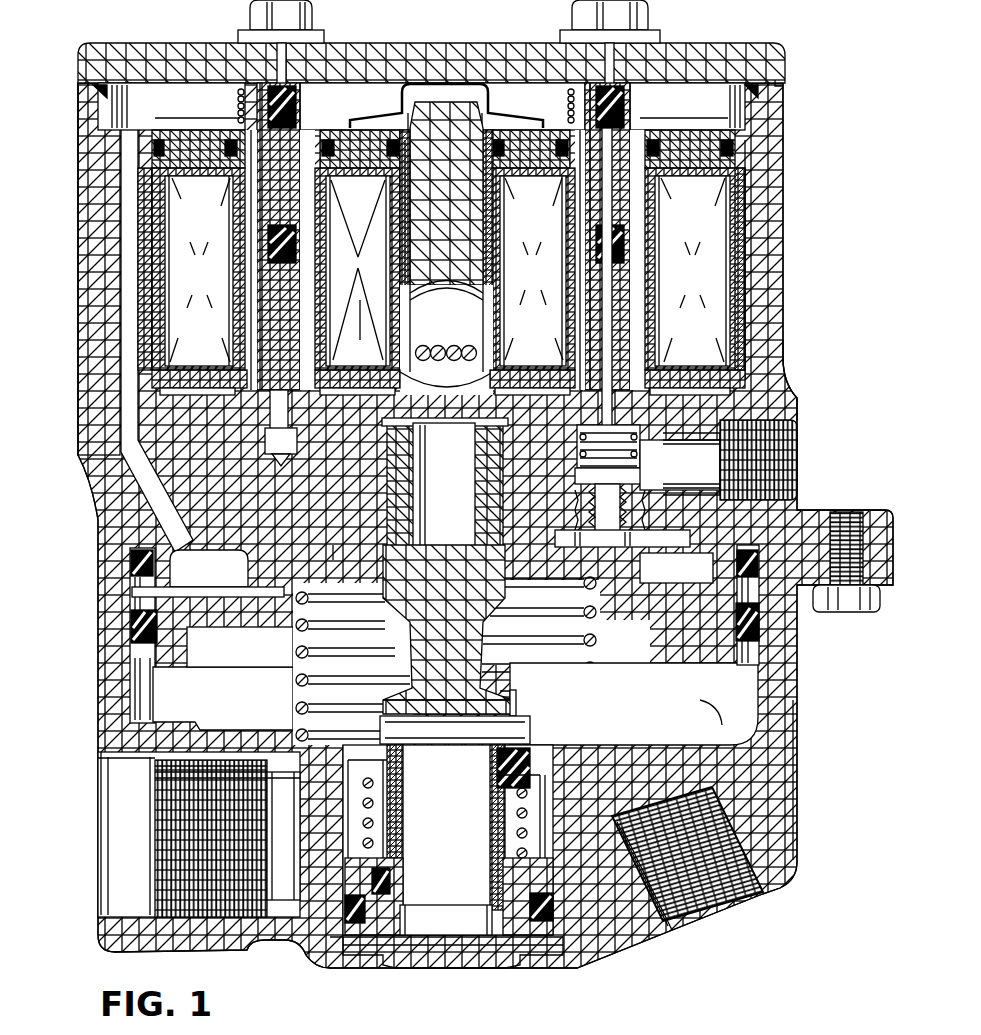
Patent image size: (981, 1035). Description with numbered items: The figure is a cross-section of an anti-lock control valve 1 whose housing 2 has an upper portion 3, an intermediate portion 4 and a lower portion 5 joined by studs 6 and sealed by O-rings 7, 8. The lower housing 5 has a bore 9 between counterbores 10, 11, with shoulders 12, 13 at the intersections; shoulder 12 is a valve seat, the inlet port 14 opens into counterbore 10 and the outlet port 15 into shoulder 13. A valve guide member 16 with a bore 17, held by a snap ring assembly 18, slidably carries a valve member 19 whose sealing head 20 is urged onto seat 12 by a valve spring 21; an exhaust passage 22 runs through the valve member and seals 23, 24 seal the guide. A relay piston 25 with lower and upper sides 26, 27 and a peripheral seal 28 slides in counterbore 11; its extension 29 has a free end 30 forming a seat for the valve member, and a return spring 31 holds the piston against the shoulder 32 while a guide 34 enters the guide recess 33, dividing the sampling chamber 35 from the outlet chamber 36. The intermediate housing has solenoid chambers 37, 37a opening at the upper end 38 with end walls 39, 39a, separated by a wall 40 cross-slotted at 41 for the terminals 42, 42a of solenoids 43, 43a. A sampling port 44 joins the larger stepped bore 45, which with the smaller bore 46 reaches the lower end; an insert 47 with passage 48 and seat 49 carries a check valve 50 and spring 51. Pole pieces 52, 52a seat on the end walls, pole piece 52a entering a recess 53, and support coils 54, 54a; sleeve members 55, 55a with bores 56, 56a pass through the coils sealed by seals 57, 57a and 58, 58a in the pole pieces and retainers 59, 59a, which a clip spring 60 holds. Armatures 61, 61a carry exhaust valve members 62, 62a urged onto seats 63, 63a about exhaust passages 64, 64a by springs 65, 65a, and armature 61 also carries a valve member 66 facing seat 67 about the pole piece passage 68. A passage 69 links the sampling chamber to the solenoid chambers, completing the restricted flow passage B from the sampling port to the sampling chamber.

The control valve 1 is at (80, 507).
The housing 2 is at (78, 437).
The upper housing portion 3 is at (786, 50).
The intermediate housing portion 4 is at (788, 372).
The lower housing portion 5 is at (786, 823).
The studs 6 is at (650, 6).
The seal 7 is at (93, 92).
The seal 8 is at (130, 563).
The bore 9 is at (515, 731).
The counterbore 10 is at (548, 802).
The counterbore 11 is at (755, 694).
The annular shoulder 12 is at (514, 720).
The annular shoulder 13 is at (242, 726).
The inlet port 14 is at (100, 912).
The outlet port 15 is at (755, 896).
The valve guide member 16 is at (553, 916).
The guide bore 17 is at (500, 920).
The groove and snap ring assembly 18 is at (552, 957).
The valve member 19 is at (461, 853).
The sealing head 20 is at (497, 760).
The valve spring 21 is at (352, 826).
The exhaust passage 22 is at (490, 803).
The seal 23 is at (348, 906).
The seal 24 is at (392, 880).
The relay piston 25 is at (657, 670).
The lower side 26 is at (222, 640).
The upper side 27 is at (333, 545).
The peripheral seal 28 is at (130, 624).
The extension 29 is at (461, 650).
The free end portion 30 is at (470, 700).
The return spring 31 is at (597, 641).
The shoulder 32 is at (240, 548).
The guide recess 33 is at (385, 465).
The guide 34 is at (415, 490).
The sampling chamber 35 is at (692, 576).
The outlet chamber 36 is at (719, 713).
The solenoid chamber 37 is at (747, 184).
The solenoid chamber 37a is at (412, 190).
The upper end 38 is at (781, 84).
The end wall 39 is at (678, 402).
The end wall 39a is at (210, 405).
The wall 40 is at (460, 153).
The lead-out slot 41 is at (476, 290).
The terminal 42 is at (480, 352).
The terminal 42a is at (420, 352).
The solenoid 43 is at (722, 227).
The solenoid 43a is at (402, 222).
The sampling port 44 is at (790, 492).
The larger stepped bore 45 is at (588, 517).
The smaller stepped bore 46 is at (598, 412).
The insert 47 is at (578, 550).
The passage 48 is at (610, 550).
The valve seat 49 is at (640, 512).
The check valve 50 is at (575, 482).
The valve spring 51 is at (578, 448).
The pole piece 52 is at (648, 310).
The pole piece 52a is at (330, 318).
The recess 53 is at (265, 440).
The electrical coil 54 is at (541, 279).
The electrical coil 54a is at (208, 286).
The sleeve member 55 is at (560, 192).
The sleeve member 55a is at (232, 183).
The sleeve bore 56 is at (577, 222).
The sleeve bore 56a is at (246, 225).
The seal 57 is at (578, 328).
The seal 57a is at (242, 330).
The seal 58 is at (556, 150).
The seal 58a is at (226, 150).
The coil retainer 59 is at (705, 161).
The coil retainer 59a is at (372, 161).
The clip spring 60 is at (465, 82).
The armature member 61 is at (622, 191).
The armature member 61a is at (298, 193).
The exhaust valve member 62 is at (708, 103).
The exhaust valve member 62a is at (312, 103).
The exhaust valve seat 63 is at (626, 86).
The exhaust valve seat 63a is at (298, 86).
The exhaust passage 64 is at (606, 63).
The exhaust passage 64a is at (278, 63).
The return spring 65 is at (567, 106).
The return spring 65a is at (238, 104).
The valve member 66 is at (648, 227).
The valve seat 67 is at (650, 284).
The pole piece passage 68 is at (648, 347).
The passage 69 is at (128, 257).
The restricted flow passage means B is at (102, 212).